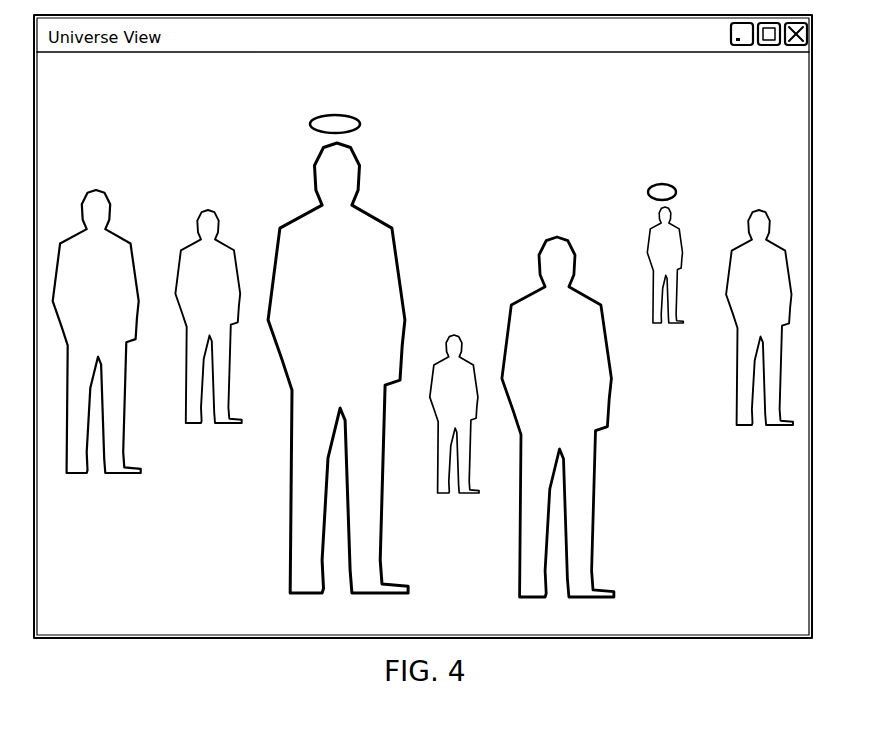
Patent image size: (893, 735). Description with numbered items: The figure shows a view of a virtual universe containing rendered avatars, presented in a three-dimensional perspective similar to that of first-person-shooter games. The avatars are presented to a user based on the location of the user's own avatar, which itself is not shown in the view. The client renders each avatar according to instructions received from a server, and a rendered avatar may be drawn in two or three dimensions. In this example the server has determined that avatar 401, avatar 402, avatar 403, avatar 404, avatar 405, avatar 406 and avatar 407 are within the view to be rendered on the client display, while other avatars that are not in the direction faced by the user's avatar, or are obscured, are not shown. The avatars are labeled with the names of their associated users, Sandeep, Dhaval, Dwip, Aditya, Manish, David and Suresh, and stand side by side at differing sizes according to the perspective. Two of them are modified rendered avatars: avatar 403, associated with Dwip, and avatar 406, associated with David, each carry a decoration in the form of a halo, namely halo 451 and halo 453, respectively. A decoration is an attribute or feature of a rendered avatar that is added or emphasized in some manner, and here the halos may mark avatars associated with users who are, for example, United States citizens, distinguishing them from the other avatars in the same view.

The avatar 401 is at (90, 192).
The avatar 402 is at (203, 212).
The avatar 403 is at (302, 218).
The avatar 404 is at (458, 336).
The avatar 405 is at (565, 239).
The avatar 406 is at (678, 228).
The avatar 407 is at (764, 212).
The halo 451 is at (330, 117).
The halo 453 is at (666, 185).